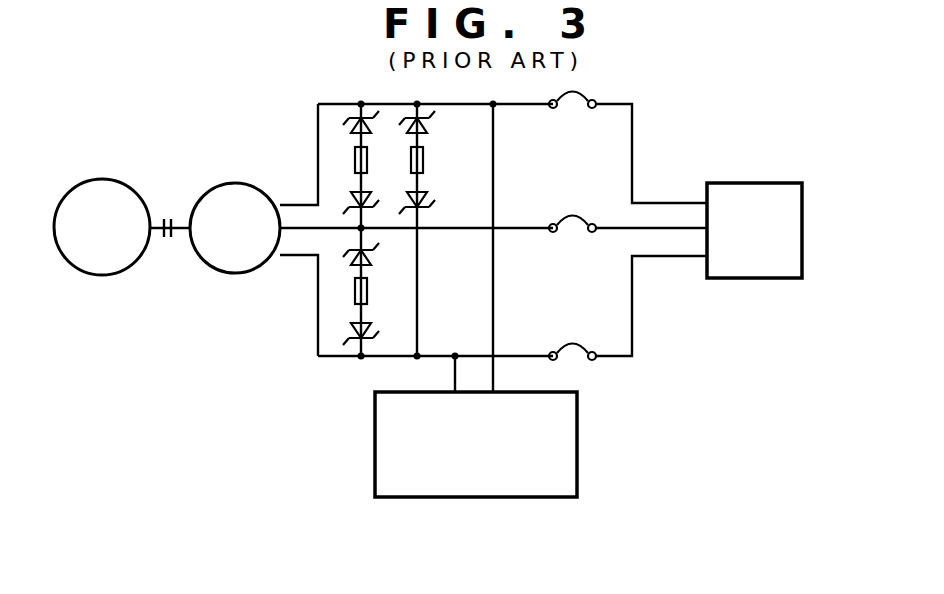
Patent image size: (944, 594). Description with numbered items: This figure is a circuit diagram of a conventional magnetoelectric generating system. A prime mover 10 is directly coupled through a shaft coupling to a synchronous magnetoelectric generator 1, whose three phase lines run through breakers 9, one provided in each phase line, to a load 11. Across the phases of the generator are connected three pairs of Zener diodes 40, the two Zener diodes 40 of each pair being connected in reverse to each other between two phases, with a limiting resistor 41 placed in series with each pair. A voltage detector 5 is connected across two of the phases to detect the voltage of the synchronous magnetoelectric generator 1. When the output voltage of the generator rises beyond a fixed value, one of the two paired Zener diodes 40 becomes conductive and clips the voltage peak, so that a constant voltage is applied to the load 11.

The synchronous magnetoelectric generator 1 is at (237, 274).
The voltage detector 5 is at (375, 430).
The breakers 9 is at (570, 353).
The prime mover 10 is at (106, 275).
The load 11 is at (735, 280).
The Zener diodes 40 is at (353, 114).
The limiting resistors 41 is at (354, 158).